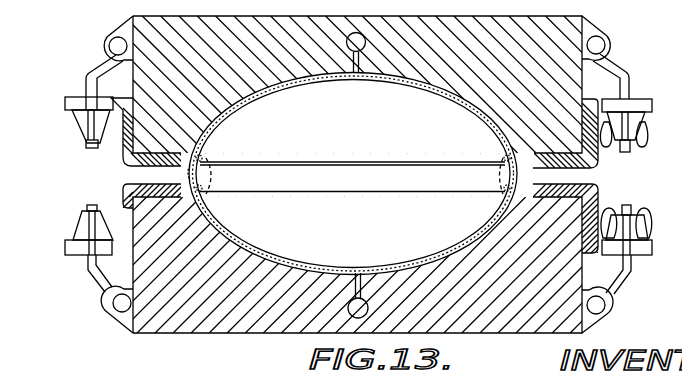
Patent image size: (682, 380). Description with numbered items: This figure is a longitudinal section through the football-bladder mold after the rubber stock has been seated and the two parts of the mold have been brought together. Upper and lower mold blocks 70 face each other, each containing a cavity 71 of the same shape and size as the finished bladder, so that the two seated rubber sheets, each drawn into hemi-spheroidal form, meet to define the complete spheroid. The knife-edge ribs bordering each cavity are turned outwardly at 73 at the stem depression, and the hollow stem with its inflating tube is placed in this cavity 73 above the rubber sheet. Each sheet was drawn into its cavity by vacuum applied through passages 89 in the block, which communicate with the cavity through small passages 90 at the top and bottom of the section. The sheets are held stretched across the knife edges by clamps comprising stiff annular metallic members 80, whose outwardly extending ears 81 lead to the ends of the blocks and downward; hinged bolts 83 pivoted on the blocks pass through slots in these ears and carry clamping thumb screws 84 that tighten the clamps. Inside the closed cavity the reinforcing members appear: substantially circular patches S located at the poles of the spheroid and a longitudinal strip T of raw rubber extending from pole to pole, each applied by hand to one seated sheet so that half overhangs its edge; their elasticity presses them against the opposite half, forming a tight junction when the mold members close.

The mold blocks 70 is at (554, 47).
The cavities 71 is at (280, 86).
The outwardly turned portion of rib 73 is at (205, 195).
The annular metallic members 80 is at (561, 170).
The ears 81 is at (178, 178).
The hinged bolts 83 is at (630, 66).
The clamping thumb screws 84 is at (80, 124).
The passages 89 is at (367, 48).
The small passages 90 is at (345, 78).
The reinforcing patches S is at (208, 152).
The longitudinal strip T is at (352, 176).